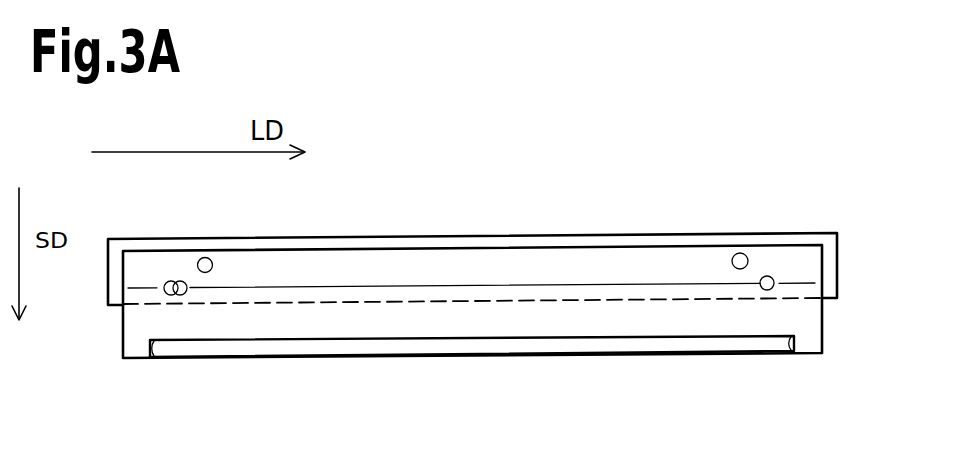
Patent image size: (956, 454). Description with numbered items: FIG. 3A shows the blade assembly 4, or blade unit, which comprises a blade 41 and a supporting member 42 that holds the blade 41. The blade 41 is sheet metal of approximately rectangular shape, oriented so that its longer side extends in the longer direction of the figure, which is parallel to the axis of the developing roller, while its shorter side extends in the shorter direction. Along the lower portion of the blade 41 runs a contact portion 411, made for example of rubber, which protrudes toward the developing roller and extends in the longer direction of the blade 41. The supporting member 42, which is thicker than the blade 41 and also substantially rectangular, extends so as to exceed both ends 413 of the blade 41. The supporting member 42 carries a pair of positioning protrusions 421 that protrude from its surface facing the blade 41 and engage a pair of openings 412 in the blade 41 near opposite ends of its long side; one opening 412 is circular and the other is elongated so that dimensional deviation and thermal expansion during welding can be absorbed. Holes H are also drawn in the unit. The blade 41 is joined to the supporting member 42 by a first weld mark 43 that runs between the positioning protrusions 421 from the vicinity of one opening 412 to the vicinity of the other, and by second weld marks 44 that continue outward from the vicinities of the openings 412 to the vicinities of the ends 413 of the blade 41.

The blade assembly 4 is at (692, 162).
The blade 41 is at (337, 264).
The supporting member 42 is at (408, 236).
The first weld mark 43 is at (605, 283).
The second weld mark 44 is at (147, 290).
The contact portion 411 is at (494, 346).
The openings 412 is at (177, 295).
The ends 413 is at (123, 329).
The positioning protrusion 421 is at (174, 281).
The hole H is at (206, 257).